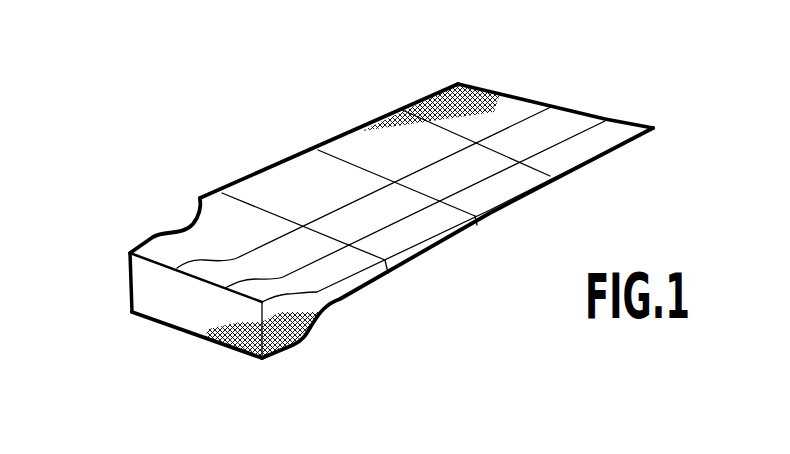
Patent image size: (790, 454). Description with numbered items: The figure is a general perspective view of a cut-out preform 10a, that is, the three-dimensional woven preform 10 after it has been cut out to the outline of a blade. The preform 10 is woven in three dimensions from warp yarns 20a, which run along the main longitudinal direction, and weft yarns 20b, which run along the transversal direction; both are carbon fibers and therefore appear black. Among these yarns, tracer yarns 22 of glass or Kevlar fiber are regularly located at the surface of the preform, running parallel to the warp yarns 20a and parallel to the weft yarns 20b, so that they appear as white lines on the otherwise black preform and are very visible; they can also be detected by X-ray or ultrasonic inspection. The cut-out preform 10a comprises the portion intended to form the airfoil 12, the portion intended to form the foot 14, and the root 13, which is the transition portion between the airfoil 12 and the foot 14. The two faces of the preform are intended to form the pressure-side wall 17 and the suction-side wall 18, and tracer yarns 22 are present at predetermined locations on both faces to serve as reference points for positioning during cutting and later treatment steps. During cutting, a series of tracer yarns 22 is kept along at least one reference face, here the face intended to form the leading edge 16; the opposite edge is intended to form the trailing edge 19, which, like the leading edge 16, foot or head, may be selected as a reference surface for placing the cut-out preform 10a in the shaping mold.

The three-dimensional preform 10 is at (317, 112).
The cut-out preform 10a is at (351, 200).
The airfoil 12 is at (258, 165).
The root 13 is at (152, 237).
The foot 14 is at (132, 315).
The leading edge 16 is at (483, 220).
The pressure-side wall 17 is at (583, 167).
The suction-side wall 18 is at (613, 132).
The trailing edge 19 is at (297, 154).
The warp yarns 20a is at (456, 86).
The weft yarns 20b is at (431, 108).
The tracer yarns 22 is at (503, 150).